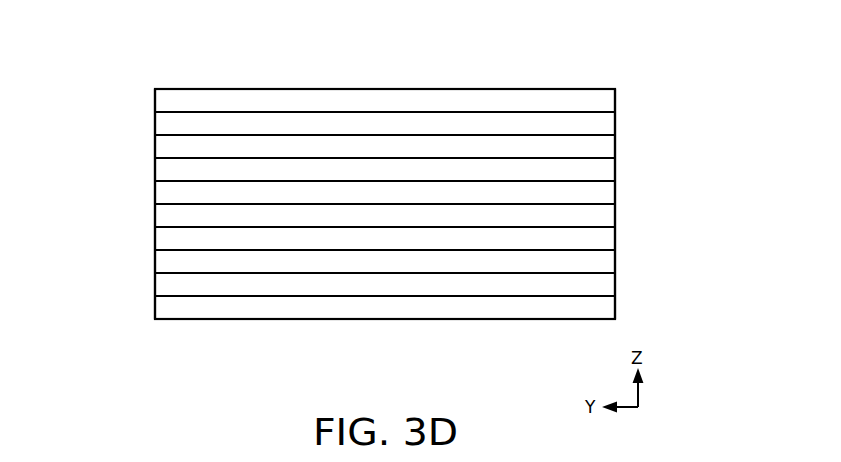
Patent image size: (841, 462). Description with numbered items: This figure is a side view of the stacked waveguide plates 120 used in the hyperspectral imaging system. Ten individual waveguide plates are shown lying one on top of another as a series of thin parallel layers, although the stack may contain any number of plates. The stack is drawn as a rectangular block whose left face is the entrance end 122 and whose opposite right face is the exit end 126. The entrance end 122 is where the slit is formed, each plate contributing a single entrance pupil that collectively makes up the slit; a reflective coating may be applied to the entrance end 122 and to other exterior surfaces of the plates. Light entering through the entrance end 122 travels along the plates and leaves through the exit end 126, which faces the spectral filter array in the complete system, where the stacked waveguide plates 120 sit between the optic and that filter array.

The stacked waveguide plates 120 is at (124, 125).
The entrance end 122 is at (156, 190).
The exit end 126 is at (616, 217).